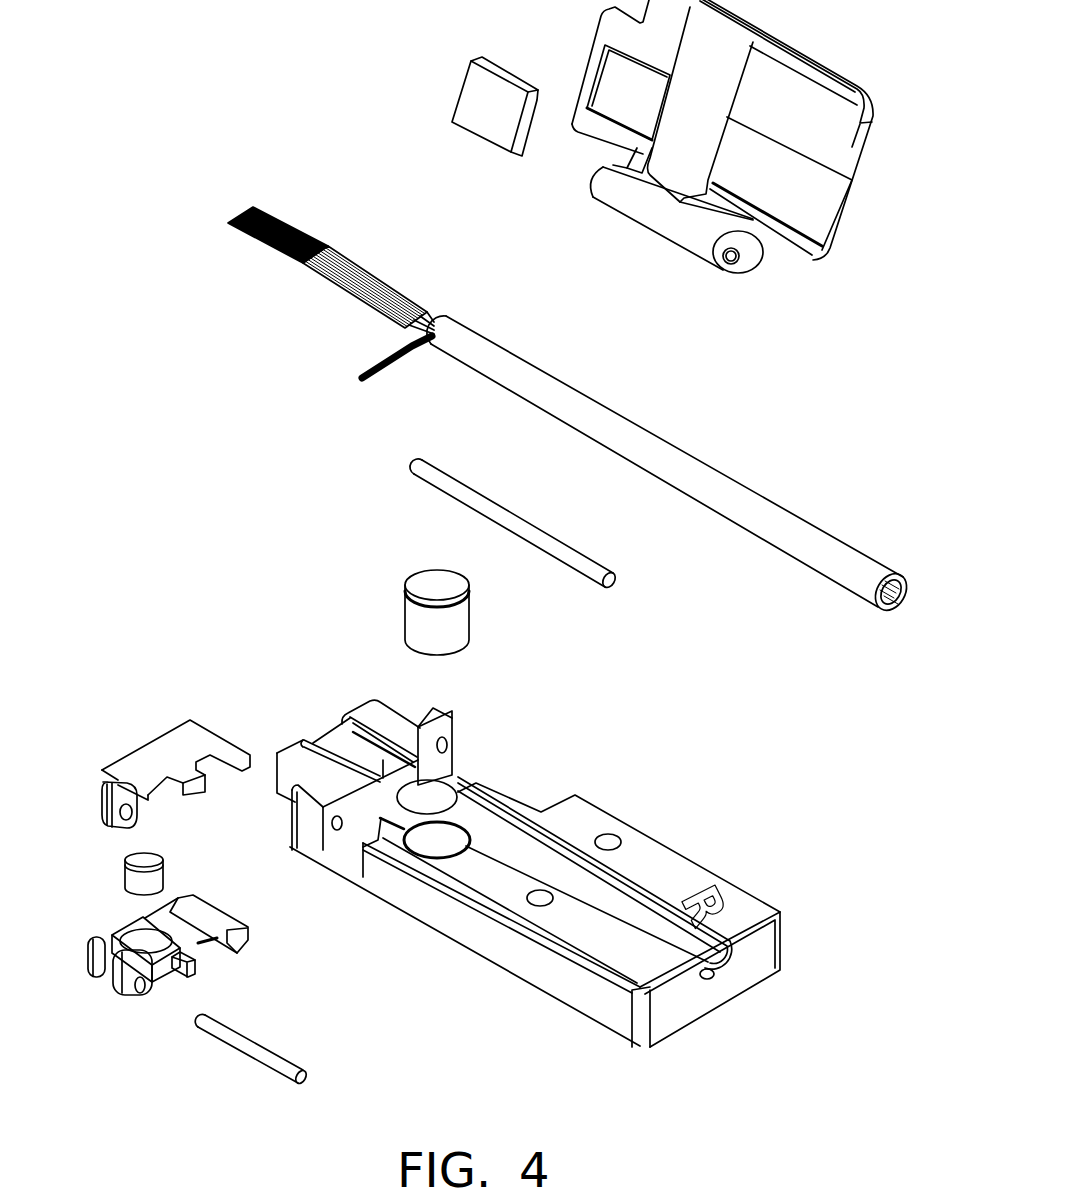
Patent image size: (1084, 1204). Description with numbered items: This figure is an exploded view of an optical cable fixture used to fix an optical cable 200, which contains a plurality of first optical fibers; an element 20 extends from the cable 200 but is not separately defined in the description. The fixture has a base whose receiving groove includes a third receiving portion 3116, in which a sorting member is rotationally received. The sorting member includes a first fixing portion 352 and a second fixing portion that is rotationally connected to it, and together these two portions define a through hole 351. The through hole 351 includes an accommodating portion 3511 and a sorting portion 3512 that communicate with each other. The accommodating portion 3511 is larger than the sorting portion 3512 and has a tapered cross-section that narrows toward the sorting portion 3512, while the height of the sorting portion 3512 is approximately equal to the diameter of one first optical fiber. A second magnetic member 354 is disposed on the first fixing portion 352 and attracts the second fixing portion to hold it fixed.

The flat cable 20 is at (282, 223).
The optical cable 200 is at (657, 452).
The second magnetic member 354 is at (133, 880).
The third receiving portion 3116 is at (430, 790).
The through hole 351 is at (248, 945).
The accommodating portion 3511 is at (248, 935).
The sorting portion 3512 is at (183, 900).
The first fixing portion 352 is at (214, 959).